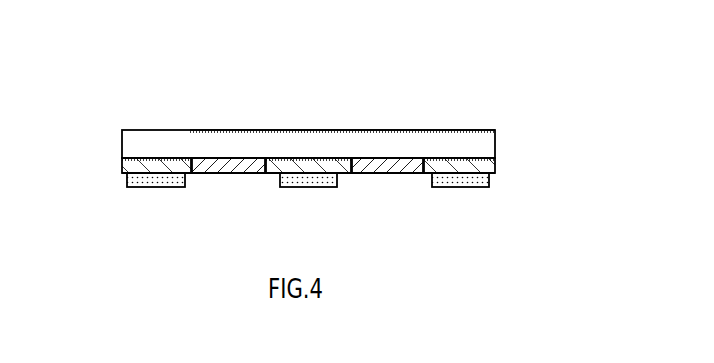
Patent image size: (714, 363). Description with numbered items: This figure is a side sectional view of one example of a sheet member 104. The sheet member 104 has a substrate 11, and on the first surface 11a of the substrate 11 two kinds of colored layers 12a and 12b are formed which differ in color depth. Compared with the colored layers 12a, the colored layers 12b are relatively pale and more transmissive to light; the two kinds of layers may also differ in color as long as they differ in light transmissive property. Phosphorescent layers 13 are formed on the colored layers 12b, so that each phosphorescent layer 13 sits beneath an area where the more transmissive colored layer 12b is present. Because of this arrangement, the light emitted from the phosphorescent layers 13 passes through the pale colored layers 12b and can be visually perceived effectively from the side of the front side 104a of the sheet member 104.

The sheet member 104 is at (182, 104).
The front side 104a is at (413, 129).
The substrate 11 is at (497, 141).
The first surface 11a is at (486, 177).
The colored layer 12a is at (228, 165).
The colored layer 12b is at (138, 164).
The phosphorescent layer 13 is at (148, 190).